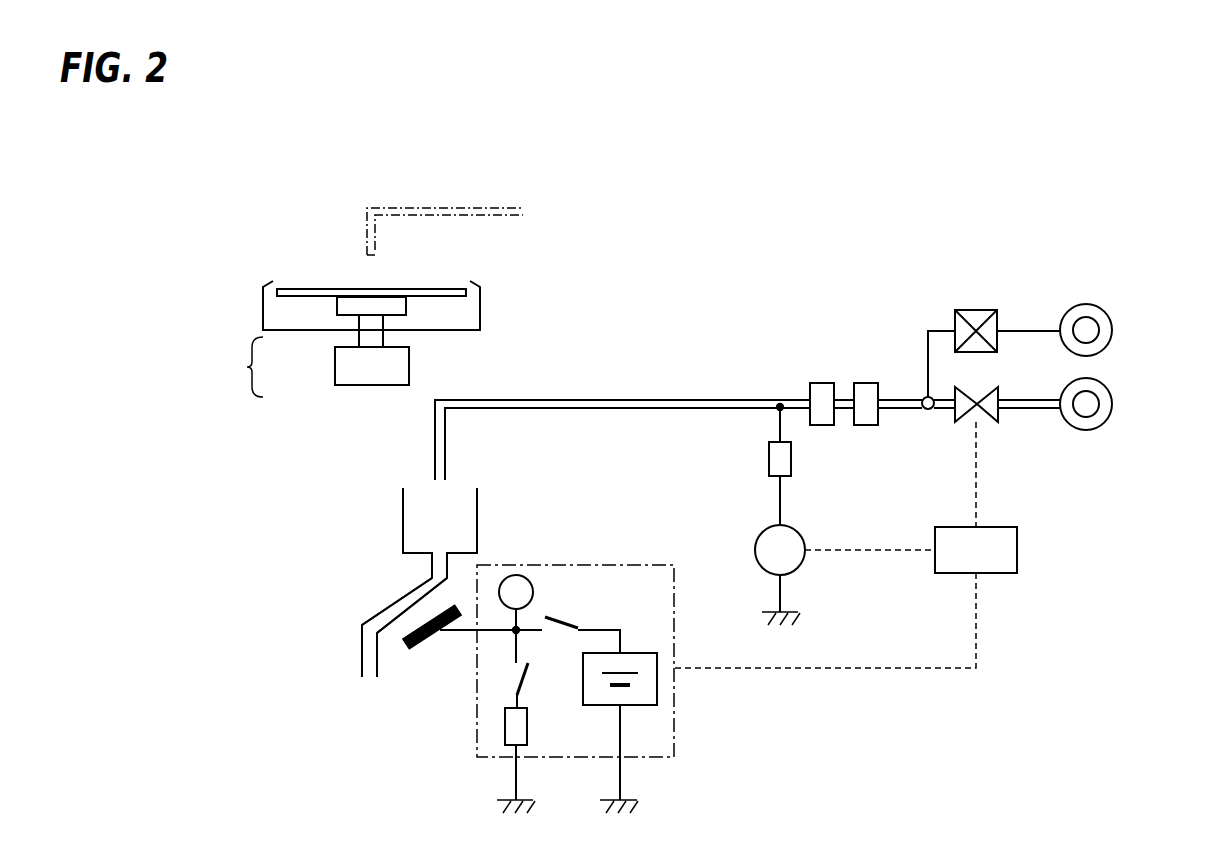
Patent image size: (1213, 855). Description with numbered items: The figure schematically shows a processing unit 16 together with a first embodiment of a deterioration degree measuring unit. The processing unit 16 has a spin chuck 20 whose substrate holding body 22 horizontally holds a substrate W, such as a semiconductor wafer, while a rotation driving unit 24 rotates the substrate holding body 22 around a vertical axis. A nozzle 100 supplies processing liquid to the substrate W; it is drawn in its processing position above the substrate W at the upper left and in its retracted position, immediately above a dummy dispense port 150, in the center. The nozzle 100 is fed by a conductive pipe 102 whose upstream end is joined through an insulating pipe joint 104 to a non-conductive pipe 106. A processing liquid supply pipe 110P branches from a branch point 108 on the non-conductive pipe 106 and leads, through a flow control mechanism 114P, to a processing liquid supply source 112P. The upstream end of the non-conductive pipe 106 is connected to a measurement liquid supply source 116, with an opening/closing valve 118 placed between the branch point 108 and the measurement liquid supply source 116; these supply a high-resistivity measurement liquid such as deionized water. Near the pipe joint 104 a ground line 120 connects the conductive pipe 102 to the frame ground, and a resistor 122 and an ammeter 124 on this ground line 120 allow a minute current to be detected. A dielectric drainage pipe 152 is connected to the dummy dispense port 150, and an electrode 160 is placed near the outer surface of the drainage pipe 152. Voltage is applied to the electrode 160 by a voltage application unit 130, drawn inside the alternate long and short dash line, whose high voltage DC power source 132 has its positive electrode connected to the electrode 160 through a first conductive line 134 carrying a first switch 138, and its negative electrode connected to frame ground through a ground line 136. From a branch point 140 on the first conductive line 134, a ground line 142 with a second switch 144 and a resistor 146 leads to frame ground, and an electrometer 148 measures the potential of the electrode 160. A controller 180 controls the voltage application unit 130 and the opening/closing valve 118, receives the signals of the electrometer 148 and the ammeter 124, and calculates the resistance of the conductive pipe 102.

The processing unit 16 is at (773, 253).
The substrate W is at (307, 289).
The spin chuck 20 is at (239, 367).
The substrate holding body 22 is at (337, 310).
The rotation driving unit 24 is at (337, 365).
The nozzle 100 is at (376, 235).
The conductive pipe 102 is at (448, 208).
The pipe joint 104 is at (843, 398).
The non-conductive pipe 106 is at (900, 400).
The branch point 108 is at (928, 410).
The processing liquid supply pipe 110P is at (1035, 330).
The processing liquid supply source 112P is at (1112, 331).
The flow control mechanism 114P is at (978, 308).
The measurement liquid supply source 116 is at (1112, 404).
The opening/closing valve 118 is at (1000, 420).
The ground line 120 is at (780, 505).
The resistor 122 is at (791, 460).
The ammeter 124 is at (755, 550).
The voltage application unit 130 is at (650, 565).
The high voltage DC power source 132 is at (657, 690).
The first conductive line 134 is at (607, 630).
The ground line 136 is at (620, 778).
The first switch 138 is at (562, 617).
The branch point 140 is at (514, 631).
The ground line 142 is at (517, 778).
The second switch 144 is at (517, 687).
The resistor 146 is at (505, 730).
The electrometer 148 is at (517, 575).
The dummy dispense port 150 is at (403, 520).
The drainage pipe 152 is at (400, 600).
The electrode 160 is at (410, 646).
The controller 180 is at (1017, 551).